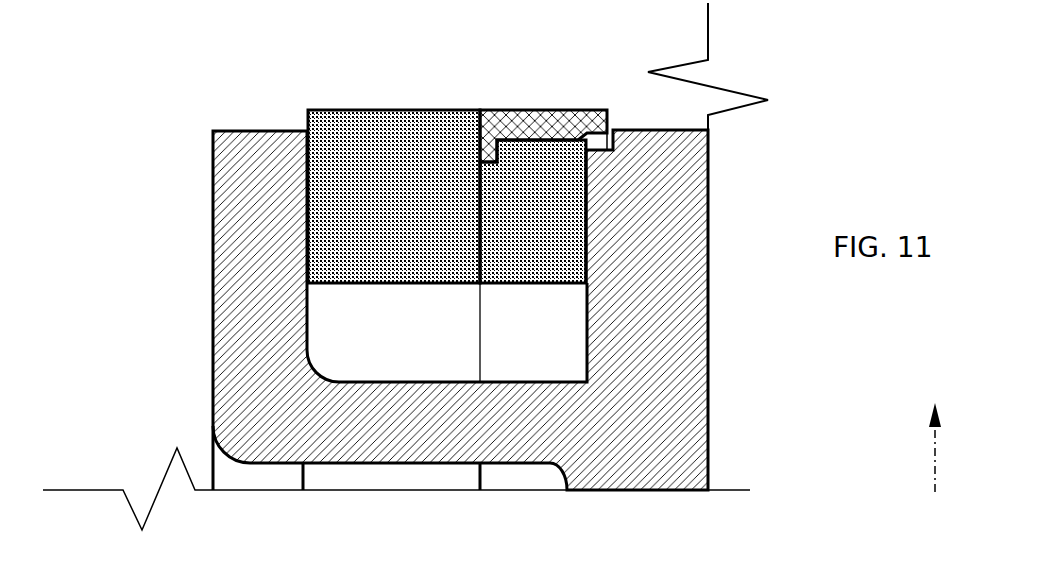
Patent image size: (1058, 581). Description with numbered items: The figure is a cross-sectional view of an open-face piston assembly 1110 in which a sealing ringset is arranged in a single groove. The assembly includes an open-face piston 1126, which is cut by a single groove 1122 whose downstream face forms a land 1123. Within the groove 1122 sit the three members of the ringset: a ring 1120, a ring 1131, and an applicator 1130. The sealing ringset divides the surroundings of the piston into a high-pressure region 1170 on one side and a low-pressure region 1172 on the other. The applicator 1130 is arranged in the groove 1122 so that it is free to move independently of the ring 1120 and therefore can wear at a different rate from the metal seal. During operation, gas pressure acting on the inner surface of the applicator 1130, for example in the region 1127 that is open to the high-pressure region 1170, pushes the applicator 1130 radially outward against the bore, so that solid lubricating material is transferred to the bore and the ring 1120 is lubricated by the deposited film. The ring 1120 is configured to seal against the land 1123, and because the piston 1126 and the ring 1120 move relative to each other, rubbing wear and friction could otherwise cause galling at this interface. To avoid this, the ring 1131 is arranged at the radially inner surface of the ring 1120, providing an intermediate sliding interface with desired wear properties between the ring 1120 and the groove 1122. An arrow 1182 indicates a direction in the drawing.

The open-face piston assembly 1110 is at (186, 180).
The ring 1120 is at (541, 110).
The groove 1122 is at (590, 349).
The land 1123 is at (590, 224).
The open-face piston 1126 is at (299, 428).
The region 1127 is at (355, 350).
The applicator 1130 is at (428, 208).
The ring 1131 is at (558, 221).
The high-pressure region 1170 is at (181, 323).
The low-pressure region 1172 is at (784, 438).
The direction 1182 is at (935, 433).